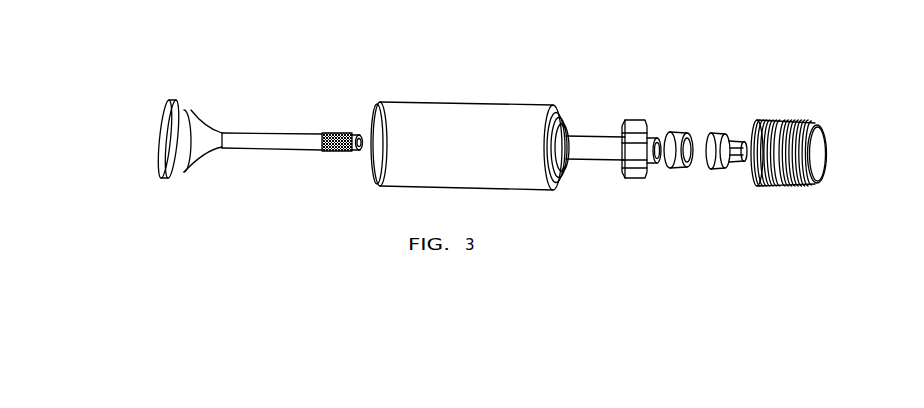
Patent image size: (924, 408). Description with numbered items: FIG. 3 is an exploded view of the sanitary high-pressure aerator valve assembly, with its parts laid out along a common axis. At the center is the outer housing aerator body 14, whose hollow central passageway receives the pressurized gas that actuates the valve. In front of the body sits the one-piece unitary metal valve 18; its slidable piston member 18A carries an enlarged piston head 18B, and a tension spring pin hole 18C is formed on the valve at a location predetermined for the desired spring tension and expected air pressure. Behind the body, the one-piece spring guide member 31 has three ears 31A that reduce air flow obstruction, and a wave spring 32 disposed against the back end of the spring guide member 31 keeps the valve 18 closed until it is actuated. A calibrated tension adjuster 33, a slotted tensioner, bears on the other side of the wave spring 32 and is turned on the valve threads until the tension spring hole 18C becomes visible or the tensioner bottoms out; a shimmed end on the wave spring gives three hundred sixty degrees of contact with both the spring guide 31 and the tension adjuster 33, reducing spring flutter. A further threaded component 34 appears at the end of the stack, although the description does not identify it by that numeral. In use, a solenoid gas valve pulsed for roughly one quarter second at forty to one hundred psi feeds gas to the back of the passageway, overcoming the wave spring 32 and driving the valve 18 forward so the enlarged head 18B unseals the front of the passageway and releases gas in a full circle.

The one-piece unitary valve 18 is at (160, 127).
The slidable piston member 18A is at (250, 130).
The enlarged piston head 18B is at (335, 133).
The tension spring pin hole 18C is at (353, 135).
The outer housing aerator body 14 is at (437, 102).
The spring guide member 31 is at (598, 133).
The ear 31A is at (640, 177).
The wave spring 32 is at (685, 130).
The calibrated tension adjuster 33 is at (728, 137).
The threaded coupling 34 is at (813, 122).